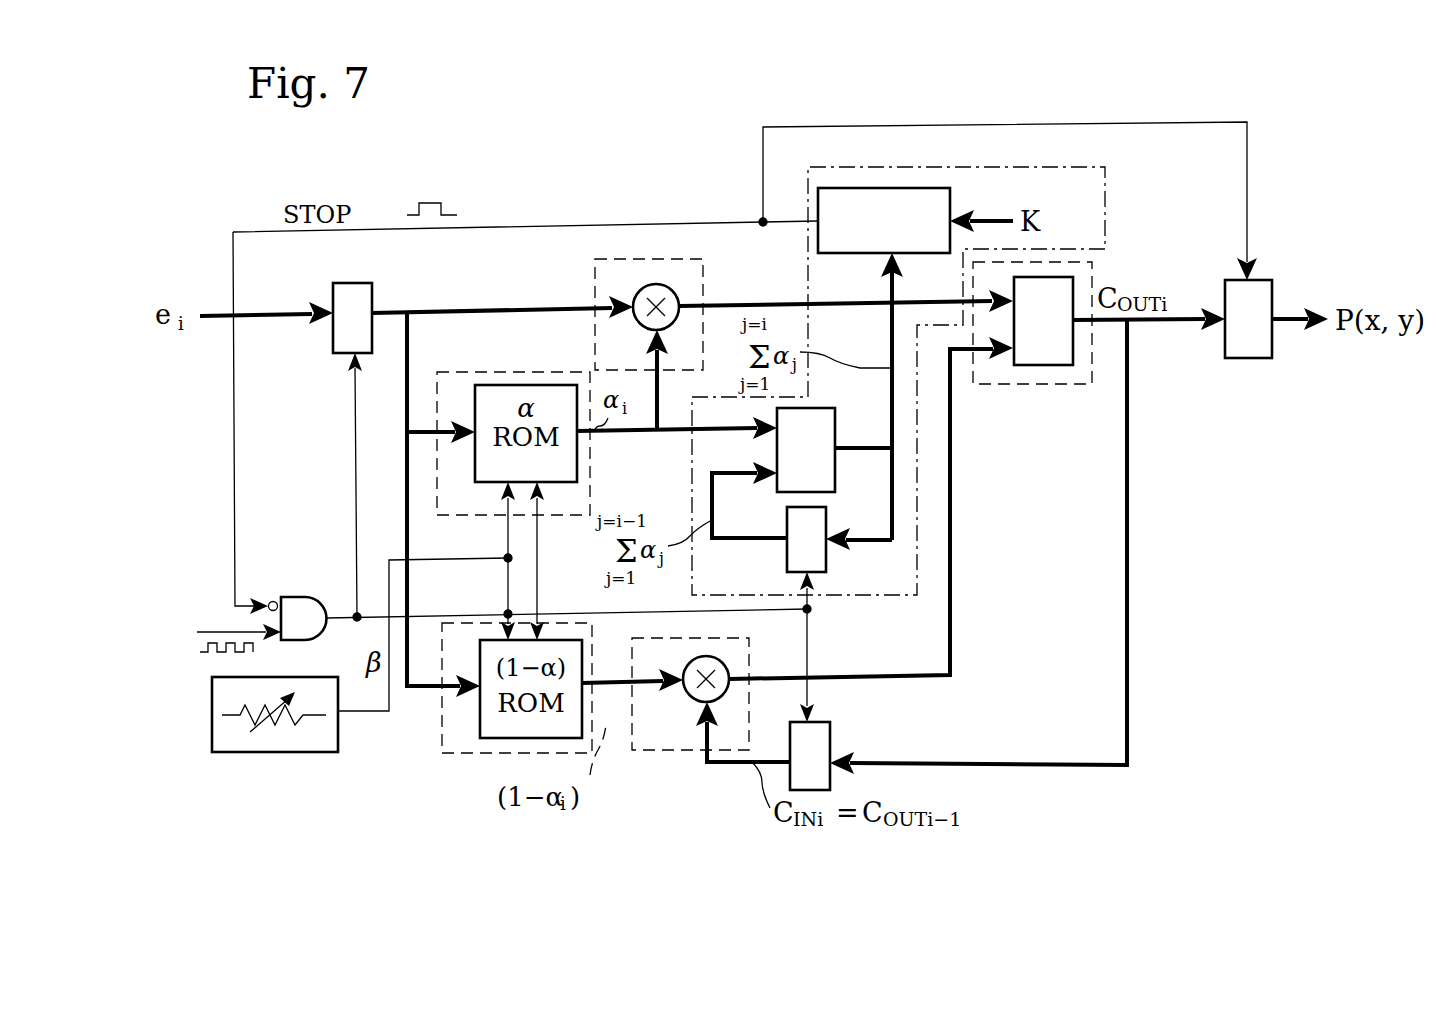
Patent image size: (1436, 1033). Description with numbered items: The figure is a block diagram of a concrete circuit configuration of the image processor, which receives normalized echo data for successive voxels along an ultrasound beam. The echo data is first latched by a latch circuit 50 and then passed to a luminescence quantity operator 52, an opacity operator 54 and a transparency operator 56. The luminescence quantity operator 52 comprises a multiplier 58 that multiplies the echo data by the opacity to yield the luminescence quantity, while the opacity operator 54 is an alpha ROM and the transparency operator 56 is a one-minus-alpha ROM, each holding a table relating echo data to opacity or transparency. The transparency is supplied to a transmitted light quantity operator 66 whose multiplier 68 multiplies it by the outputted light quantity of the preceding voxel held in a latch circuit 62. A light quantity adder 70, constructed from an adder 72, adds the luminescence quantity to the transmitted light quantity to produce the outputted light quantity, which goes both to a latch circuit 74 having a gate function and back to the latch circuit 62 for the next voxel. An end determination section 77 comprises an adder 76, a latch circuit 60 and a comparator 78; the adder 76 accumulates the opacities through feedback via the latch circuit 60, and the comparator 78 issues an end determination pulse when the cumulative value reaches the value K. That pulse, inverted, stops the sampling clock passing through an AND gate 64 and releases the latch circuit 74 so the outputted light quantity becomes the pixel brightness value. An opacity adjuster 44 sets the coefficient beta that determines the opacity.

The opacity adjuster 44 is at (270, 752).
The latch circuit 50 is at (372, 292).
The luminescence quantity operator 52 is at (642, 258).
The opacity operator 54 is at (520, 372).
The transparency operator 56 is at (447, 747).
The multiplier 58 is at (678, 290).
The latch circuit 60 is at (826, 565).
The latch circuit 62 is at (830, 729).
The AND gate 64 is at (296, 597).
The transmitted light quantity operator 66 is at (658, 753).
The multiplier 68 is at (725, 667).
The light quantity adder 70 is at (1000, 384).
The adder 72 is at (1050, 365).
The latch circuit 74 is at (1245, 358).
The adder 76 is at (835, 420).
The end determination section 77 is at (985, 165).
The comparator 78 is at (880, 187).